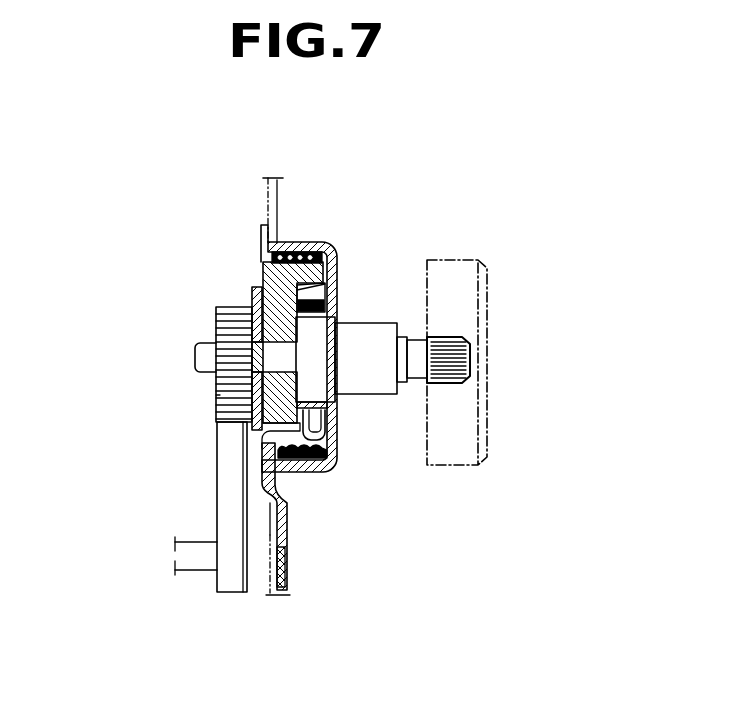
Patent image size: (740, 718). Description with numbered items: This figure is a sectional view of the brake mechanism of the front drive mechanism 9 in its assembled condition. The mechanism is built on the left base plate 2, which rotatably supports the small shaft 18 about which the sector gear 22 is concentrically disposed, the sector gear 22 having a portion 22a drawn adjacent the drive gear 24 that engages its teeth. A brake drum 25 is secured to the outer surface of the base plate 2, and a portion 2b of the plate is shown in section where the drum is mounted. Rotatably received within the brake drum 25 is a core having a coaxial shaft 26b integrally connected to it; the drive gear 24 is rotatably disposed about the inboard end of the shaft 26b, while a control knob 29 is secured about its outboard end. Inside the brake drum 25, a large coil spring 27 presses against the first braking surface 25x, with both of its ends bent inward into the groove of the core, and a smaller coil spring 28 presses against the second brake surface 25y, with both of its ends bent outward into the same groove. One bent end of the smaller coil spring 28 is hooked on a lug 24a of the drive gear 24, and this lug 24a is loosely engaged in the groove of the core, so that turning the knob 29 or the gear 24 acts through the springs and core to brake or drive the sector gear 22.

The front drive mechanism 9 is at (240, 158).
The left base plate 2 is at (277, 197).
The housing bearing portion 2b is at (283, 262).
The brake drum 25 is at (313, 240).
The large coil spring 27 is at (330, 243).
The second brake surface 25y is at (318, 292).
The coaxial shaft 26b is at (363, 338).
The drive gear 24 is at (214, 317).
The plate portion 22a is at (215, 416).
The first braking surface 25x is at (263, 458).
The smaller coil spring 28 is at (333, 408).
The control knob 29 is at (465, 422).
The sector gear 22 is at (222, 498).
The lug 24a is at (275, 478).
The small shaft 18 is at (203, 560).